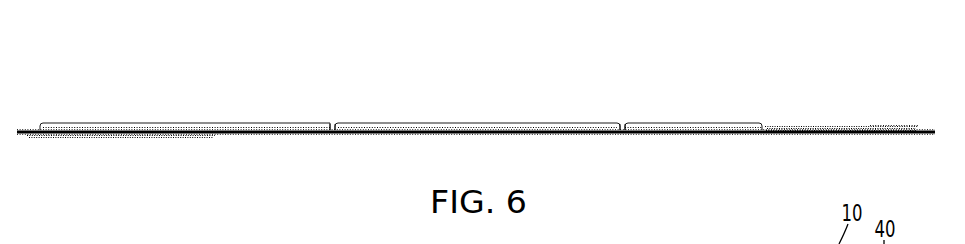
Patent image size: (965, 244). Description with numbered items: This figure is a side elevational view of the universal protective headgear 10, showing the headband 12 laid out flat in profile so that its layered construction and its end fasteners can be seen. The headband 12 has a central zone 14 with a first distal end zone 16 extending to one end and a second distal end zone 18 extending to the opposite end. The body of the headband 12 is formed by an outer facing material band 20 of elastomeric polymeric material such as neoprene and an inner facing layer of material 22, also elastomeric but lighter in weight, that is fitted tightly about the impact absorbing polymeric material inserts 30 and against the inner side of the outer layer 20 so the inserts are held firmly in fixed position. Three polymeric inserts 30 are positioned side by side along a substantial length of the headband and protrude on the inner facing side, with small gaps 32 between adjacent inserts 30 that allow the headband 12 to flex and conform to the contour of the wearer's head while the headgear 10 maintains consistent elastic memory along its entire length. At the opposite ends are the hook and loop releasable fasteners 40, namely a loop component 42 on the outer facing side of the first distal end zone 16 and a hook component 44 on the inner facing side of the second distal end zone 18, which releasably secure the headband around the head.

The universal protective headgear 10 is at (801, 65).
The headband 12 is at (376, 142).
The central zone 14 is at (553, 135).
The first distal end zone 16 is at (250, 134).
The second distal end zone 18 is at (775, 134).
The outer facing material band 20 is at (670, 134).
The inner facing layer of material 22 is at (541, 128).
The impact absorbing polymeric material inserts 30 is at (250, 128).
The gaps 32 is at (331, 128).
The hook and loop releasable fastener 40 is at (877, 126).
The loop component 42 is at (93, 137).
The hook component 44 is at (842, 127).